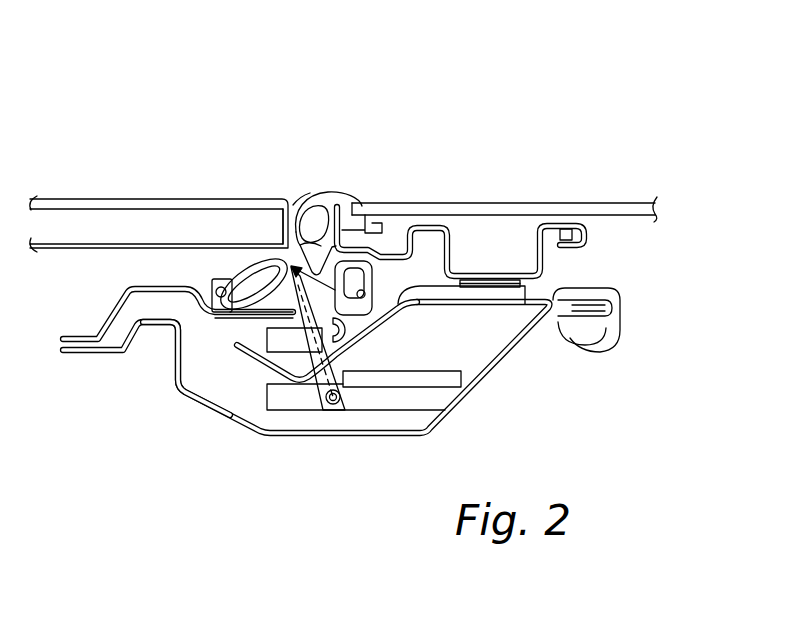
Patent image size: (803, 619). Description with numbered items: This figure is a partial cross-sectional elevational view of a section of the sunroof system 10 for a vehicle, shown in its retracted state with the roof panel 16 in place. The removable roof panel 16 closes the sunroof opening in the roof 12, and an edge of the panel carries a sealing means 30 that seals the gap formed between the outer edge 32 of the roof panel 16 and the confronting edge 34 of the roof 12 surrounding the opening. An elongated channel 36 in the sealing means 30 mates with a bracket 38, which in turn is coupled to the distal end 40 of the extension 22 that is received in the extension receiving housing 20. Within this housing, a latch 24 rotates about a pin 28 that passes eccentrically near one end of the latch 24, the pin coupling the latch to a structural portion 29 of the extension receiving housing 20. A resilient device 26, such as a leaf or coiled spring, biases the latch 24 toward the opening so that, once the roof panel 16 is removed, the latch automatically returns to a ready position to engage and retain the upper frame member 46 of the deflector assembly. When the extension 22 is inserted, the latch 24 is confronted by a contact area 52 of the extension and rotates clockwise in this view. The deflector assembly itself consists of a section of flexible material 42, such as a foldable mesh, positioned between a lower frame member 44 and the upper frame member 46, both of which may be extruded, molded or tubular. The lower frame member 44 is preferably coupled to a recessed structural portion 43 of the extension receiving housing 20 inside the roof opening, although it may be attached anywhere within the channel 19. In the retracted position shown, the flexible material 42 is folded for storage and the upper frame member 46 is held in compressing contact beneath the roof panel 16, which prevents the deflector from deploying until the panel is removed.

The sunroof system 10 is at (535, 82).
The roof 12 is at (124, 222).
The roof panel 16 is at (540, 205).
The channel 19 is at (284, 240).
The extension receiving housing 20 is at (476, 389).
The extension 22 is at (378, 348).
The latch 24 is at (313, 290).
The resilient device 26 is at (333, 425).
The pin 28 is at (328, 406).
The structural portion 29 is at (382, 393).
The sealing means 30 is at (336, 200).
The outer edge 32 is at (385, 205).
The confronting edge 34 is at (292, 207).
The elongated channel 36 is at (422, 214).
The bracket 38 is at (547, 260).
The distal end 40 is at (461, 296).
The flexible material 42 is at (210, 305).
The recessed structural portion 43 is at (167, 327).
The lower frame member 44 is at (183, 403).
The upper frame member 46 is at (375, 290).
The contact area 52 is at (622, 313).